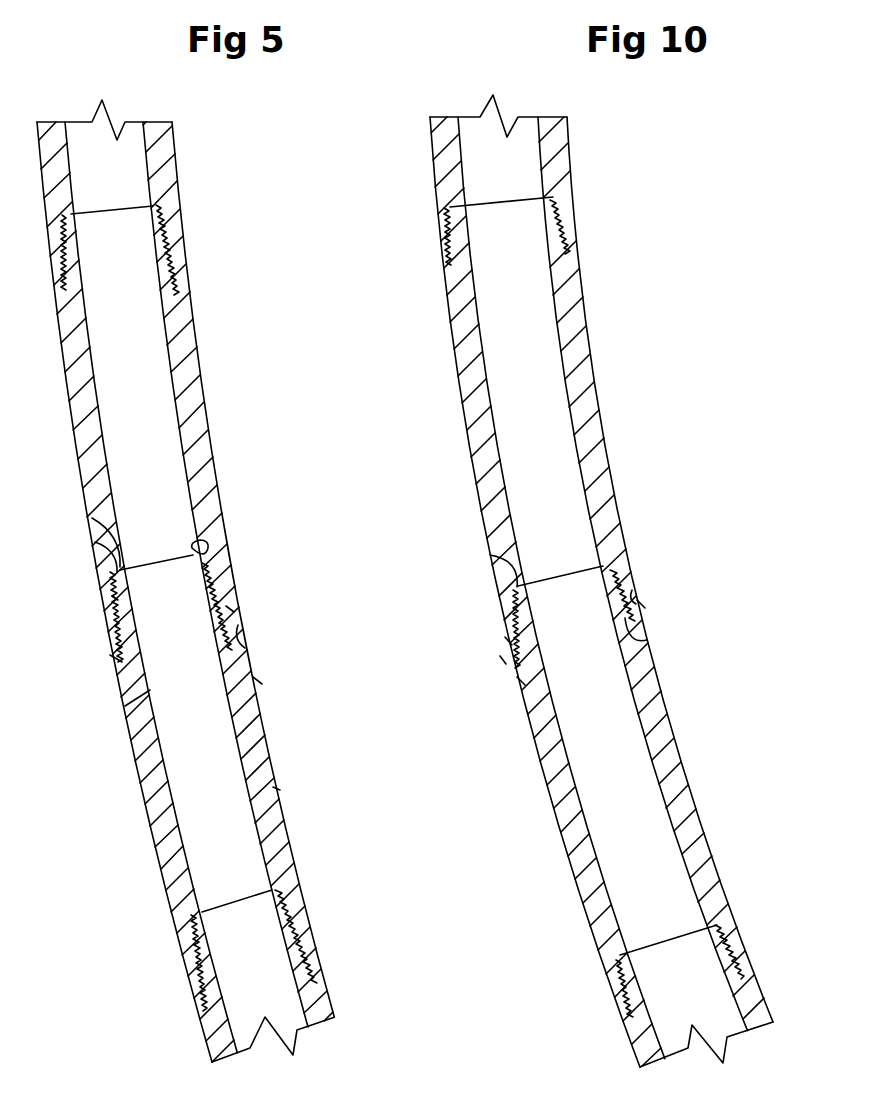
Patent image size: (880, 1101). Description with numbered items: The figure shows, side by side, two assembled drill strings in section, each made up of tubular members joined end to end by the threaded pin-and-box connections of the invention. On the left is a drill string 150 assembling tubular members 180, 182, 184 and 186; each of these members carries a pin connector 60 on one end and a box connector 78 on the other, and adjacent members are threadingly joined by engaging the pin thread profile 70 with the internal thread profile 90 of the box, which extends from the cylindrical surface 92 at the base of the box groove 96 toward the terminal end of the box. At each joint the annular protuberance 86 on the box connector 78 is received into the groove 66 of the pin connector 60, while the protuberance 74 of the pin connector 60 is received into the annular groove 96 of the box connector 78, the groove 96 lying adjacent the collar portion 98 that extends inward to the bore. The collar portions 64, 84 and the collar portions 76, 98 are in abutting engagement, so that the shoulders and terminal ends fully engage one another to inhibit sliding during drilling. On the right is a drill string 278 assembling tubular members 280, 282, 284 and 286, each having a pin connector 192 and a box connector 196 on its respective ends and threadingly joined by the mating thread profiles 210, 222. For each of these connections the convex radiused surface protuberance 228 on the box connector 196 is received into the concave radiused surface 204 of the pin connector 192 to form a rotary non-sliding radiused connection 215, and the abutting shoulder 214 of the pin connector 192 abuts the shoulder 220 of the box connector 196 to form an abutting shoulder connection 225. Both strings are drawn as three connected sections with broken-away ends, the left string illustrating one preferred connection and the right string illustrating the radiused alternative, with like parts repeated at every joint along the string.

In FIG. 5, the drill string 150 is at (237, 445).
In FIG. 5, the tubular member 180 is at (177, 165).
In FIG. 5, the tubular member 182 is at (202, 390).
In FIG. 5, the pin connector 60 is at (188, 613).
In FIG. 5, the box connector 78 is at (242, 550).
In FIG. 5, the cylindrical surface 92 is at (193, 541).
In FIG. 5, the collar portion 76 is at (85, 517).
In FIG. 5, the protuberance 74 is at (93, 542).
In FIG. 5, the annular groove 96 is at (113, 582).
In FIG. 5, the collar portion 98 is at (113, 597).
In FIG. 5, the groove 66 is at (110, 655).
In FIG. 5, the annular protuberance 86 is at (125, 706).
In FIG. 5, the thread profile 70 is at (220, 607).
In FIG. 5, the internal thread profile 90 is at (228, 610).
In FIG. 5, the collar portion 64 is at (240, 627).
In FIG. 5, the collar portion 84 is at (253, 677).
In FIG. 5, the tubular member 184 is at (273, 787).
In FIG. 5, the tubular member 186 is at (330, 1000).
In FIG. 10, the drill string 278 is at (650, 388).
In FIG. 10, the tubular member 280 is at (570, 168).
In FIG. 10, the tubular member 282 is at (590, 328).
In FIG. 10, the tubular member 284 is at (565, 830).
In FIG. 10, the abutting shoulder connection 225 is at (630, 545).
In FIG. 10, the box connector 196 is at (625, 575).
In FIG. 10, the thread profile 222 is at (633, 593).
In FIG. 10, the thread profile 210 is at (637, 600).
In FIG. 10, the pin connector 192 is at (647, 640).
In FIG. 10, the abutting shoulder 214 is at (487, 553).
In FIG. 10, the shoulder 220 is at (503, 600).
In FIG. 10, the concave radiused surface 204 is at (505, 637).
In FIG. 10, the rotary non-sliding radiused connection 215 is at (496, 659).
In FIG. 10, the convex radiused surface protuberance 228 is at (517, 677).
In FIG. 10, the tubular member 286 is at (630, 1045).